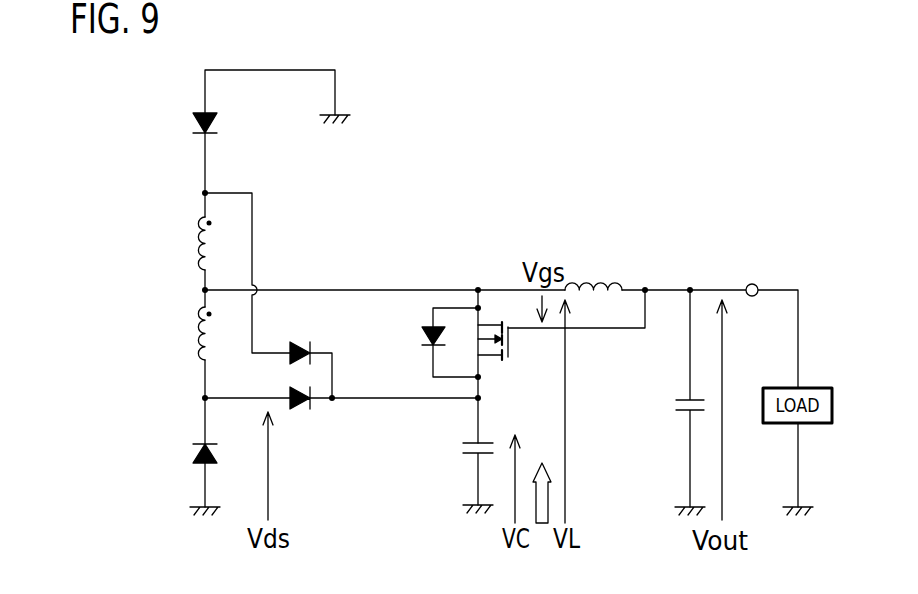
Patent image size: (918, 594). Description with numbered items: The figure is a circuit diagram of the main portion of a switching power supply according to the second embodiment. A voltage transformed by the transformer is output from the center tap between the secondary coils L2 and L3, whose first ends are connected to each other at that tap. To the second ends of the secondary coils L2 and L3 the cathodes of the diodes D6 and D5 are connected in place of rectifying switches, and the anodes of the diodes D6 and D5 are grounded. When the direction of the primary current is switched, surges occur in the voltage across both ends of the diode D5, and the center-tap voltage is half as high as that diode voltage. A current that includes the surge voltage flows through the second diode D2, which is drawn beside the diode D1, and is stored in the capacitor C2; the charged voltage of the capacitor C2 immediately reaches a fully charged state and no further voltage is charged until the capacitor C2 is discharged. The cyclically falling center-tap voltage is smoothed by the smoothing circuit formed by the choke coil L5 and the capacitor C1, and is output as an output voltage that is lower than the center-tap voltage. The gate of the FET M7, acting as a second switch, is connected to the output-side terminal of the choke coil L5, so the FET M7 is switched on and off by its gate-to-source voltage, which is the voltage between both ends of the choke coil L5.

The diode D6 is at (182, 124).
The secondary coil L2 is at (192, 243).
The secondary coil L3 is at (196, 337).
The diode D1 is at (303, 341).
The second diode D2 is at (286, 392).
The diode D5 is at (188, 455).
The FET (second switch) M7 is at (509, 357).
The choke coil L5 is at (600, 281).
The capacitor C2 is at (460, 452).
The capacitor C1 is at (673, 408).